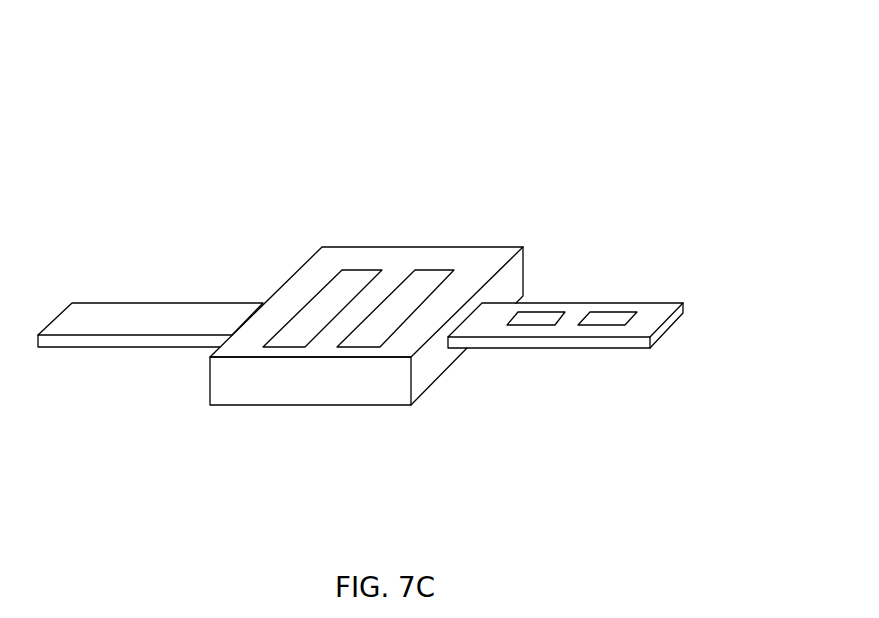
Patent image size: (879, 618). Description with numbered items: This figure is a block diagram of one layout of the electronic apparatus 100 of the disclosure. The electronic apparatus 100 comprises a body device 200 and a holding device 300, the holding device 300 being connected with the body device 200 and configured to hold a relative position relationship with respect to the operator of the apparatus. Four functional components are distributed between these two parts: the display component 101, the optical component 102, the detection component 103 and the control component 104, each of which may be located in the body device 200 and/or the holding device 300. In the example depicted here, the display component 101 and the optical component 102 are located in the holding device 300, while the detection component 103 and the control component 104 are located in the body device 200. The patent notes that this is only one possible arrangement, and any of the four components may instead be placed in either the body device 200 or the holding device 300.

The electronic apparatus 100 is at (687, 73).
The body device 200 is at (307, 258).
The holding device 300 is at (688, 280).
The display component 101 is at (370, 235).
The optical component 102 is at (432, 269).
The detection component 103 is at (543, 312).
The control component 104 is at (612, 325).